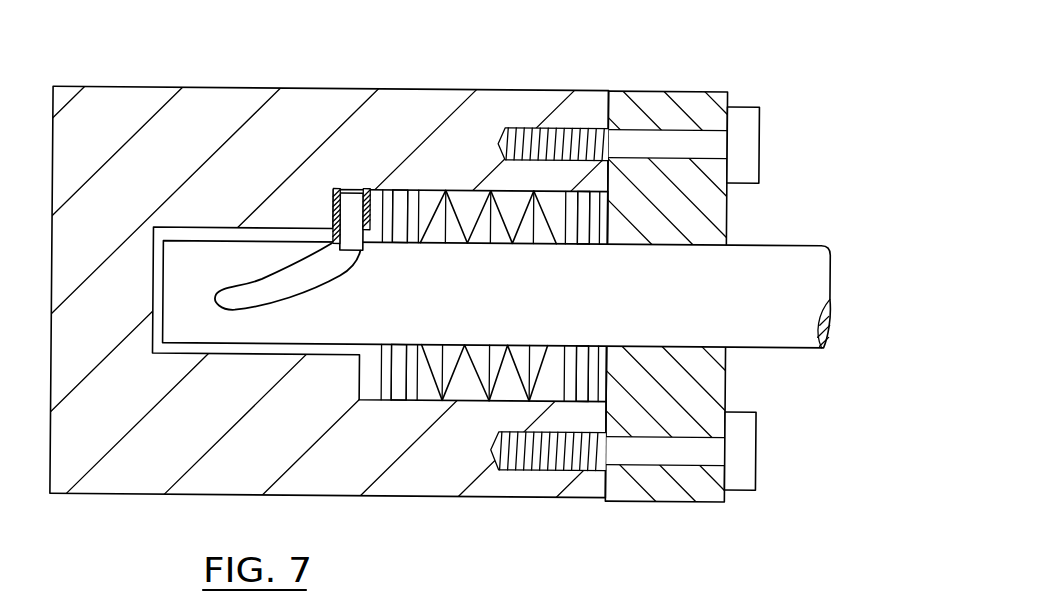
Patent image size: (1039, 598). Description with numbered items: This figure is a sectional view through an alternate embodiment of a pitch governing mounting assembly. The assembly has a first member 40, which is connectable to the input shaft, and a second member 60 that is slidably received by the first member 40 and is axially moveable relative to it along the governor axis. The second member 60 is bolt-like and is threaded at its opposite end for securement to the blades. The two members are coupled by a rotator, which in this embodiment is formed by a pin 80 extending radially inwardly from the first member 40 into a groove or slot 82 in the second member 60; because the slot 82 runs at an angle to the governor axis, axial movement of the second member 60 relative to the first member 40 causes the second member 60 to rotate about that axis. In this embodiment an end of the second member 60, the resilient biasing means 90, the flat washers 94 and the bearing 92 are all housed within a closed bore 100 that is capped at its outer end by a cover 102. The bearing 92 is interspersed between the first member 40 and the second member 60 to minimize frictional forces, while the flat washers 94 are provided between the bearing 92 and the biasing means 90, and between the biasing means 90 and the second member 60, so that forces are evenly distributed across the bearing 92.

The first member 40 is at (380, 458).
The second member 60 is at (450, 308).
The pin 80 is at (350, 218).
The slot 82 is at (305, 276).
The biasing means 90 is at (462, 182).
The bearing 92 is at (402, 190).
The flat washers 94 is at (376, 190).
The closed bore 100 is at (648, 383).
The cover 102 is at (652, 96).